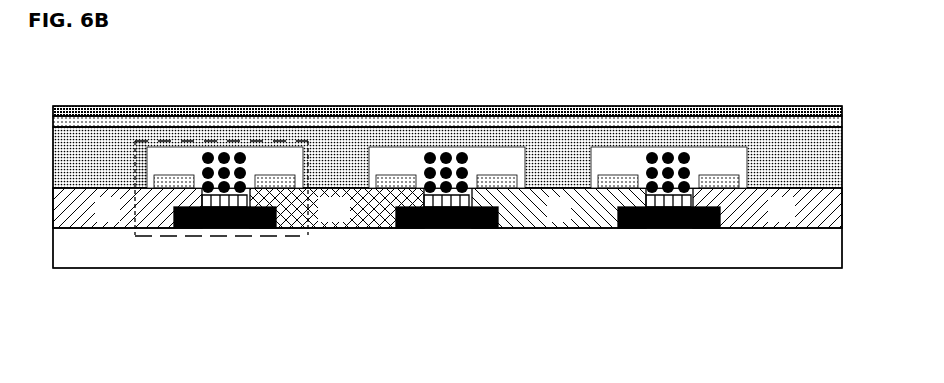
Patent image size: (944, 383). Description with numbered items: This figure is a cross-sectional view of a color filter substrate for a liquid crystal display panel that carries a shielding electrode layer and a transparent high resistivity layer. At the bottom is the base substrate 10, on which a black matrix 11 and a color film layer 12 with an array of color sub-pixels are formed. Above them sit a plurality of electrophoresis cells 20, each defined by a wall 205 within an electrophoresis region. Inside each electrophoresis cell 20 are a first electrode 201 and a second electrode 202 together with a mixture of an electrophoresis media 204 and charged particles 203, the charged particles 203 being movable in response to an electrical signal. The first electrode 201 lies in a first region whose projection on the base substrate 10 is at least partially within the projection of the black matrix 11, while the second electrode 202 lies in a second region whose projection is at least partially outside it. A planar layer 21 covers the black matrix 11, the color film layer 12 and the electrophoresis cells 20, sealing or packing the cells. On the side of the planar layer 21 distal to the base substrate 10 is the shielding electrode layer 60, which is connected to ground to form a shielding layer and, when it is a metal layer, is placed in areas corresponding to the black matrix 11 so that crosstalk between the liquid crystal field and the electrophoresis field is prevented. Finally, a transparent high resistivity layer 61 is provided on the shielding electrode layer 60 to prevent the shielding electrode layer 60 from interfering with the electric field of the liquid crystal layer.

The base substrate 10 is at (537, 268).
The black matrix 11 is at (650, 228).
The color film layer 12 is at (747, 228).
The electrophoresis cell 20 is at (240, 236).
The planar layer 21 is at (773, 127).
The shielding electrode layer 60 is at (477, 125).
The transparent high resistivity layer 61 is at (597, 108).
The first electrode 201 is at (233, 178).
The second electrode 202 is at (178, 176).
The charged particles 203 is at (246, 173).
The electrophoresis media 204 is at (165, 162).
The wall 205 is at (140, 165).